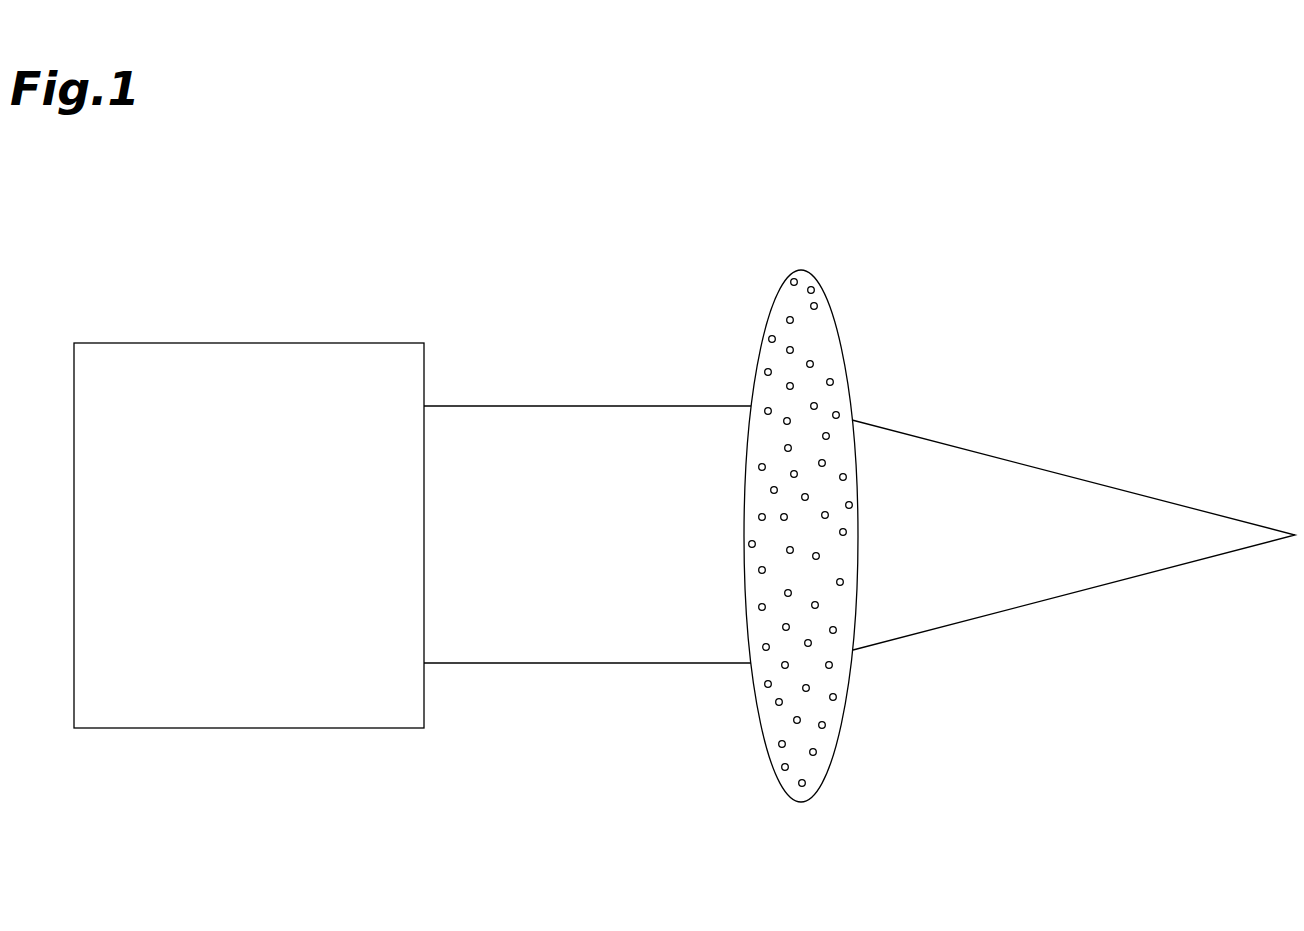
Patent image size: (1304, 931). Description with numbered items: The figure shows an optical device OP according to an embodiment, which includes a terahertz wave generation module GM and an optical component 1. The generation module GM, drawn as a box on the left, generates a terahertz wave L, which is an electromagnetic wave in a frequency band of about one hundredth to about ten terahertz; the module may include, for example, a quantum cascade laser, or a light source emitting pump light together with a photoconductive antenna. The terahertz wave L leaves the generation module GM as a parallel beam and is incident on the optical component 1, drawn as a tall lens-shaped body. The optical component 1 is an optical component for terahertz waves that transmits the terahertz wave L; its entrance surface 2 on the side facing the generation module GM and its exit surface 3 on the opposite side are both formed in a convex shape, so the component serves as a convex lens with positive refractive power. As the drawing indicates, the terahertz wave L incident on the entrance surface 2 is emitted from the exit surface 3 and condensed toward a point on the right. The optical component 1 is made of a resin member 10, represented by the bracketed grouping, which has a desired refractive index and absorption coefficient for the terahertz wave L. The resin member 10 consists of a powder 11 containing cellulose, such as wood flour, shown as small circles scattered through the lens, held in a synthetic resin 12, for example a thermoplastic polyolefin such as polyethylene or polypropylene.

The optical component 1 is at (828, 503).
The entrance surface 2 is at (757, 730).
The exit surface 3 is at (838, 755).
The resin member 10 is at (828, 536).
The powder 11 is at (905, 303).
The synthetic resin 12 is at (805, 536).
The terahertz wave generation module GM is at (330, 343).
The terahertz wave L is at (486, 406).
The optical device OP is at (946, 184).